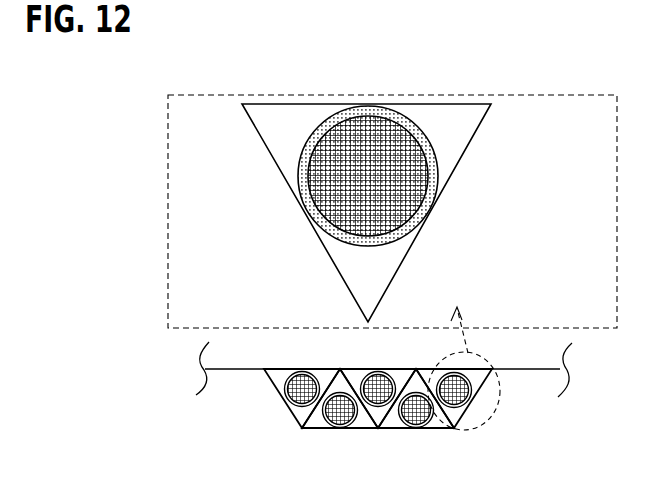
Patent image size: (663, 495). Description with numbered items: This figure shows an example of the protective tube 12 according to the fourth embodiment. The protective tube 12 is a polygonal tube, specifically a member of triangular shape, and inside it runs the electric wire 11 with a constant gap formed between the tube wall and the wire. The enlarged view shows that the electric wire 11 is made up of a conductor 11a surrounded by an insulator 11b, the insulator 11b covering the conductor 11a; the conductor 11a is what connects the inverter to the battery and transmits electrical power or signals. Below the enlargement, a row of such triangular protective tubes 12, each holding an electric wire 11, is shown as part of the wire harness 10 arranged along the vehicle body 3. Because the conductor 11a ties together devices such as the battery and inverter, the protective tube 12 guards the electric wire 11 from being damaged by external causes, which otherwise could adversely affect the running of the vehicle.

The protective tube 12 is at (270, 154).
The electric wire 11 is at (451, 177).
The conductor 11a is at (547, 152).
The insulator 11b is at (432, 153).
The vehicle body 3 is at (240, 355).
The wire harness 10 is at (487, 420).